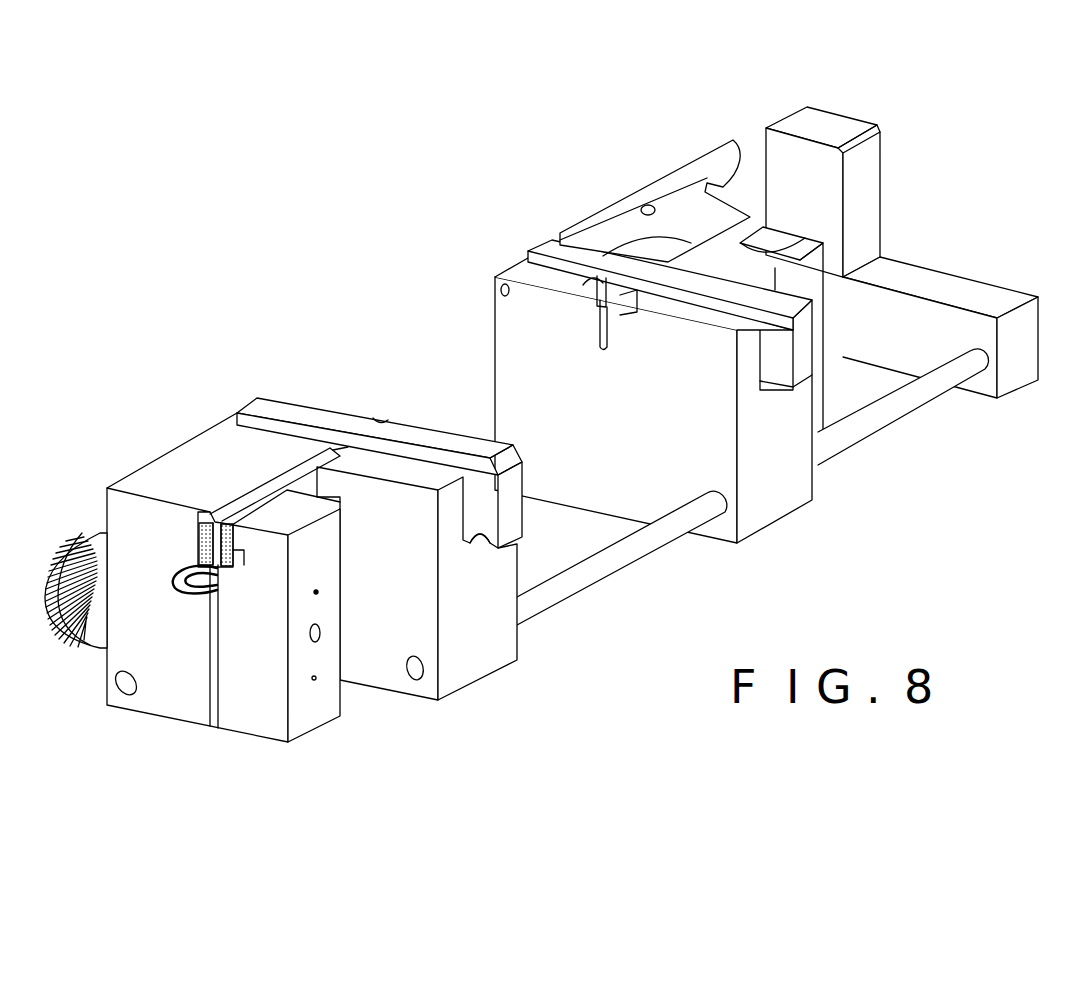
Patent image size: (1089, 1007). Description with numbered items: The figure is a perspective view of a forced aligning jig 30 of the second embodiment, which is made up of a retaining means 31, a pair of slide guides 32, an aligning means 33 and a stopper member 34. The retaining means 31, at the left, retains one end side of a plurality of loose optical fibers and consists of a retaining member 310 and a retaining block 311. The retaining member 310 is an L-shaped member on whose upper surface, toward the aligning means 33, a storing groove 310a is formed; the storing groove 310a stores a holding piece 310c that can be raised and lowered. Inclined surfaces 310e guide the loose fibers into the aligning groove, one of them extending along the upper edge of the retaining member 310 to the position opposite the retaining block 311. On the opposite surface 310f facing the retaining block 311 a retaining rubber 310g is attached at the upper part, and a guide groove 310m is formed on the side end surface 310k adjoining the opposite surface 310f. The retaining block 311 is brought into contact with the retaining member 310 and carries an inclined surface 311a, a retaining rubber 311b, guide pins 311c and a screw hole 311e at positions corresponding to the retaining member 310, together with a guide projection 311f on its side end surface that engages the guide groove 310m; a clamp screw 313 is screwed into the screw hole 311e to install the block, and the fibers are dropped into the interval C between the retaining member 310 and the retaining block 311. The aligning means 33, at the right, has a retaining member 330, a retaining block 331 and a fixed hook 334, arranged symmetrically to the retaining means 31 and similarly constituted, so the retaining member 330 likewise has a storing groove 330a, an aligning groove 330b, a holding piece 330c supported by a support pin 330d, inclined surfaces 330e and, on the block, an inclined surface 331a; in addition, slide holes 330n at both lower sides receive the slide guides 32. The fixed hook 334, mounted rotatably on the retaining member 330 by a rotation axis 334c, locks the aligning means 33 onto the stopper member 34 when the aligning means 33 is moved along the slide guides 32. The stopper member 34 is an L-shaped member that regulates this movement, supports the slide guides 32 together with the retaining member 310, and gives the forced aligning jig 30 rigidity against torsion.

The forced aligning jig 30 is at (386, 224).
The retaining means 31 is at (470, 718).
The retaining member 310 is at (314, 547).
The storing groove 310a is at (490, 548).
The holding piece 310c is at (510, 520).
The inclined surfaces 310e is at (307, 457).
The opposite surface 310f is at (213, 668).
The retaining rubber 310g is at (205, 528).
The side end surface 310k is at (125, 523).
The guide groove 310m is at (175, 569).
The retaining block 311 is at (284, 572).
The inclined surface 311a is at (243, 518).
The retaining rubber 311b is at (205, 582).
The guide pins 311c is at (316, 592).
The screw hole 311e is at (325, 632).
The guide projection 311f is at (217, 593).
The clamp screw 313 is at (72, 634).
The slide guides 32 is at (923, 397).
The aligning means 33 is at (748, 88).
The retaining member 330 is at (695, 330).
The storing groove 330a is at (828, 377).
The aligning groove 330b is at (607, 340).
The holding piece 330c is at (810, 346).
The support pin 330d is at (505, 284).
The inclined surfaces 330e is at (587, 283).
The slide holes 330n is at (743, 513).
The retaining block 331 is at (846, 265).
The inclined surface 331a is at (803, 237).
The fixed hook 334 is at (655, 175).
The rotation axis 334c is at (647, 204).
The stopper member 34 is at (930, 285).
The interval C is at (205, 522).